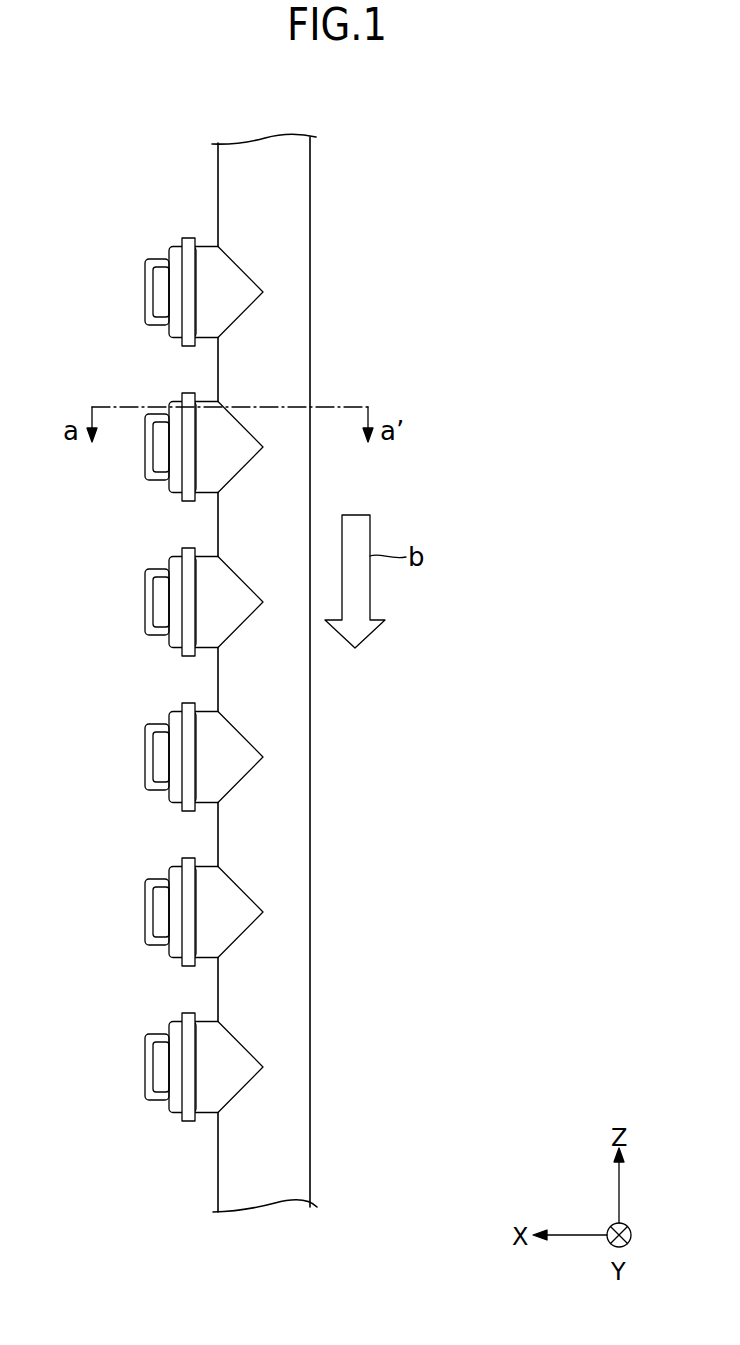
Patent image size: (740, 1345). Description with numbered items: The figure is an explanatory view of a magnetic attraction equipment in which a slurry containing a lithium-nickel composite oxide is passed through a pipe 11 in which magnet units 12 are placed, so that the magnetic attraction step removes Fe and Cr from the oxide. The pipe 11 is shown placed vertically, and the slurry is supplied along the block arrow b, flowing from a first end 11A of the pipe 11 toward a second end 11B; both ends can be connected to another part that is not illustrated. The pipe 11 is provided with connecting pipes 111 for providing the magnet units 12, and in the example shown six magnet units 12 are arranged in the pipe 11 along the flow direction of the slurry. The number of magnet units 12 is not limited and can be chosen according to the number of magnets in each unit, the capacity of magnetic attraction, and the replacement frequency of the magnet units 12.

The pipe 11 is at (310, 267).
The first end 11A is at (277, 152).
The second end 11B is at (273, 1196).
The connecting pipe 111 is at (205, 246).
The magnet unit 12 is at (145, 281).